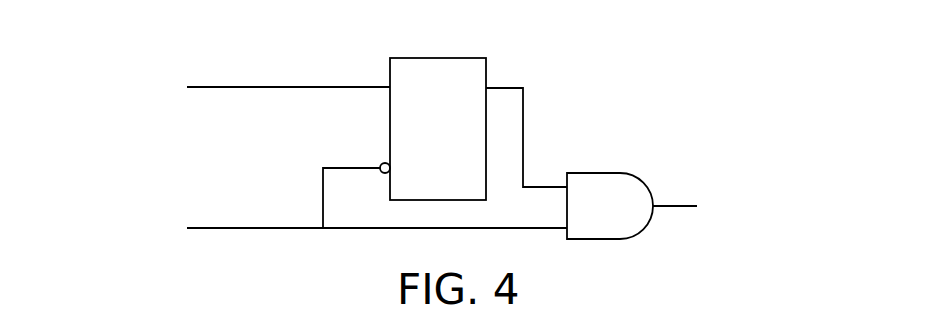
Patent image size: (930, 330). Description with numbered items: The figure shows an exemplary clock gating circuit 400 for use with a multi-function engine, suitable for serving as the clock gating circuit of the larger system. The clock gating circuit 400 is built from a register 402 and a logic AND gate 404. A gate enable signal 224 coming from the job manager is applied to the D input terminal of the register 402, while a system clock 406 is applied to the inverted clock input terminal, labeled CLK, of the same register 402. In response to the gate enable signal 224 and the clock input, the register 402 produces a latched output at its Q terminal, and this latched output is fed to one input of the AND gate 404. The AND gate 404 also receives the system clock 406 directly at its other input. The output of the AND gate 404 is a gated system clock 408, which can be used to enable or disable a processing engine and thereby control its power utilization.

The clock gating circuit 400 is at (688, 80).
The gate enable signal 224 is at (285, 85).
The register 402 is at (464, 58).
The logic AND gate 404 is at (608, 173).
The system clock 406 is at (267, 226).
The gated system clock 408 is at (677, 205).